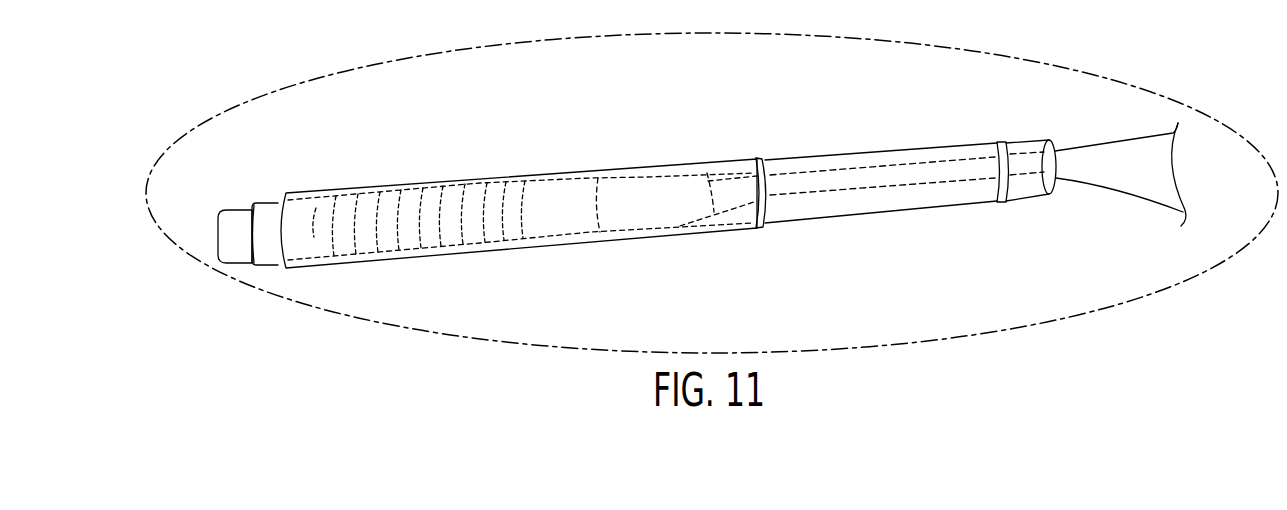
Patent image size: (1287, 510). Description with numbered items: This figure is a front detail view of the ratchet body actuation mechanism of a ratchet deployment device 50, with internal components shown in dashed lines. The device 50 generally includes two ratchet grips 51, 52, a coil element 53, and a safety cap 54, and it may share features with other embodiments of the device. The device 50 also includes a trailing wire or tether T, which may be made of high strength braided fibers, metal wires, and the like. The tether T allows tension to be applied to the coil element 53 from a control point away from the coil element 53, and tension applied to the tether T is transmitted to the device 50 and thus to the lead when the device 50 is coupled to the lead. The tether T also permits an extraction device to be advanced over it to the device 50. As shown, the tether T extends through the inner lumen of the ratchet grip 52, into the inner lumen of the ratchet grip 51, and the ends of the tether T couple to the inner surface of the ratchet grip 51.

The ratchet deployment device 50 is at (408, 155).
The ratchet grip 51 is at (650, 172).
The ratchet grip 52 is at (885, 158).
The coil element 53 is at (550, 182).
The safety cap 54 is at (474, 185).
The tether T is at (1087, 142).